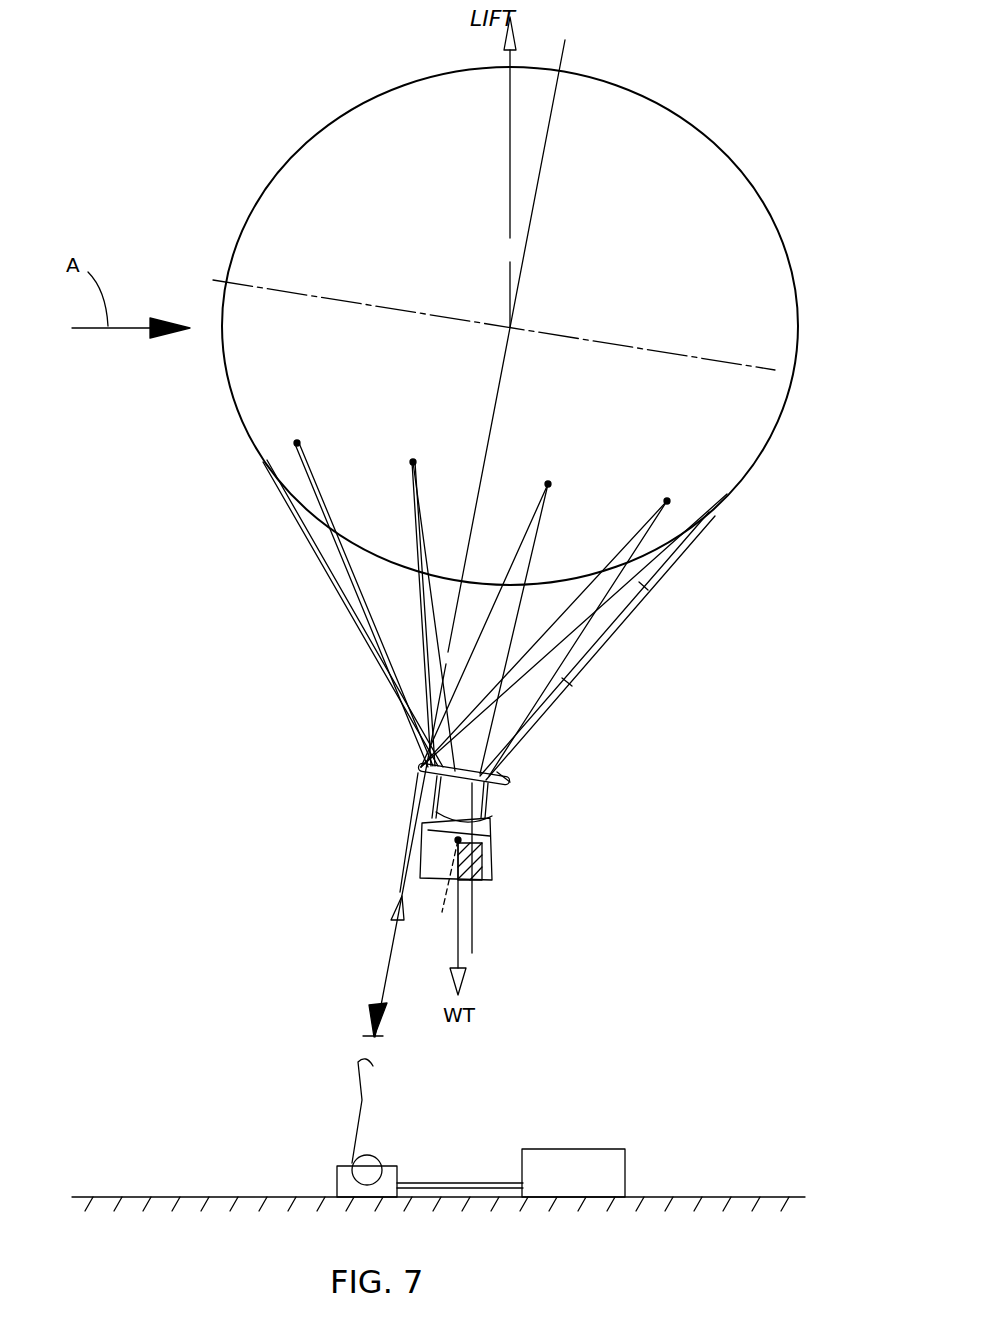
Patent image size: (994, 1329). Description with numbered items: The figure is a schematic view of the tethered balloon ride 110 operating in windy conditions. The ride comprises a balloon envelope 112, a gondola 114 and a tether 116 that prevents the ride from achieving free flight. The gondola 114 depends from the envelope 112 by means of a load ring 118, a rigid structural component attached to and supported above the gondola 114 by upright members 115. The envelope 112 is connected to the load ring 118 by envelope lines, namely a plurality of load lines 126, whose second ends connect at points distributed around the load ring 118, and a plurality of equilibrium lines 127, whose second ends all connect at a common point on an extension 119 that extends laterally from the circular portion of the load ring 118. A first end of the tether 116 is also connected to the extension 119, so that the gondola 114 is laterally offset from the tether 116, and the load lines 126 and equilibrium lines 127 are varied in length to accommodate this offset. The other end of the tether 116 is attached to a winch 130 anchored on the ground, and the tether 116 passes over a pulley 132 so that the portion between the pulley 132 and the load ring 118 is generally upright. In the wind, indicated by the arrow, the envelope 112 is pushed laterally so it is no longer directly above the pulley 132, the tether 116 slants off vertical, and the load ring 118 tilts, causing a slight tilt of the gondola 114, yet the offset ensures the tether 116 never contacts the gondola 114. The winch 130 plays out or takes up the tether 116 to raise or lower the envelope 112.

The tethered balloon ride 110 is at (808, 493).
The balloon envelope 112 is at (755, 232).
The gondola 114 is at (488, 838).
The upright members 115 is at (490, 817).
The tether 116 is at (385, 967).
The load ring 118 is at (510, 783).
The extension 119 is at (420, 772).
The load lines 126 is at (578, 686).
The equilibrium lines 127 is at (585, 598).
The winch 130 is at (598, 1155).
The pulley 132 is at (370, 1153).